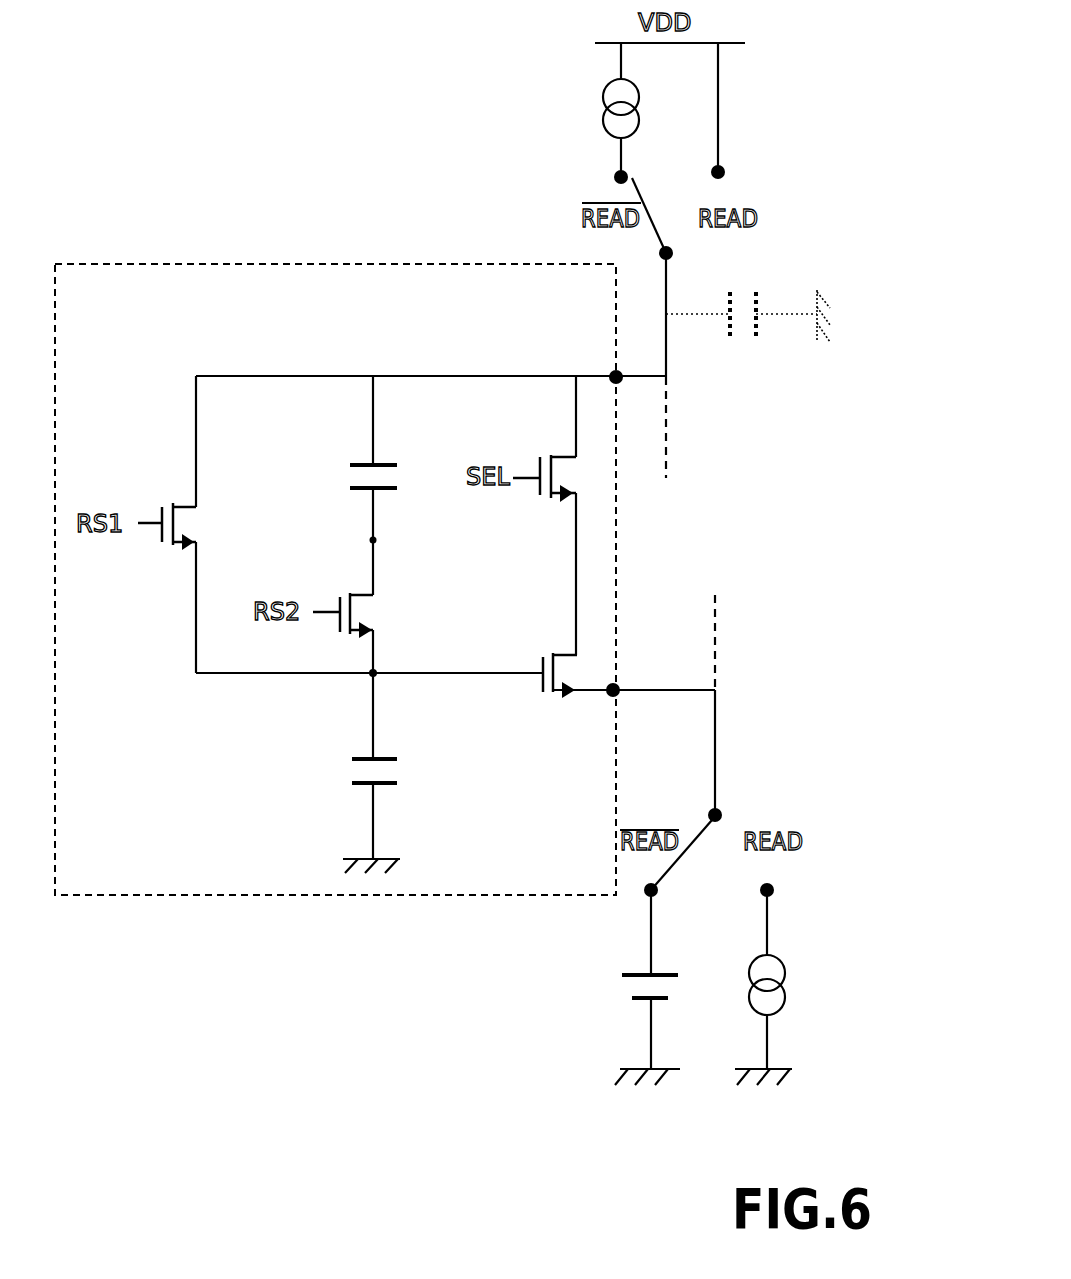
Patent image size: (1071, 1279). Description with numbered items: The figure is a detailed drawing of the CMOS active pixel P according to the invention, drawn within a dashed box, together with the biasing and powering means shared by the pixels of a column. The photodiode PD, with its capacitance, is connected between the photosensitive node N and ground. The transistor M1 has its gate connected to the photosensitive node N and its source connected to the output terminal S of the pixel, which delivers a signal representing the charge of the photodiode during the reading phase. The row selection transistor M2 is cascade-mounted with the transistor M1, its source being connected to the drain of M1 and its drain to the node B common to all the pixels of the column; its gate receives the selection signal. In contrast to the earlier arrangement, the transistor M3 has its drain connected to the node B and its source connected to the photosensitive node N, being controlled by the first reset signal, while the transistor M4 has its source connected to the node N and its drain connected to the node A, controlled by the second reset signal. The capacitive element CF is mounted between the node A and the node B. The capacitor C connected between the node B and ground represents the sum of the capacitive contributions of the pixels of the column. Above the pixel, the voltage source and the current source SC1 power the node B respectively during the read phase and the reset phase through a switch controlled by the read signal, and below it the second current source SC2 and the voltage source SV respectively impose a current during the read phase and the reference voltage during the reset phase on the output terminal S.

The CMOS active pixel P is at (230, 897).
The current source SC1 is at (604, 116).
The second current source SC2 is at (785, 975).
The node B is at (608, 372).
The capacitor C is at (745, 333).
The capacitive element CF is at (362, 464).
The node A is at (370, 539).
The transistor M3 is at (176, 521).
The transistor M4 is at (353, 611).
The row selection transistor M2 is at (553, 475).
The transistor M1 is at (570, 655).
The output terminal S is at (618, 686).
The photosensitive node N is at (372, 677).
The photodiode PD is at (360, 787).
The voltage source SV is at (640, 1000).